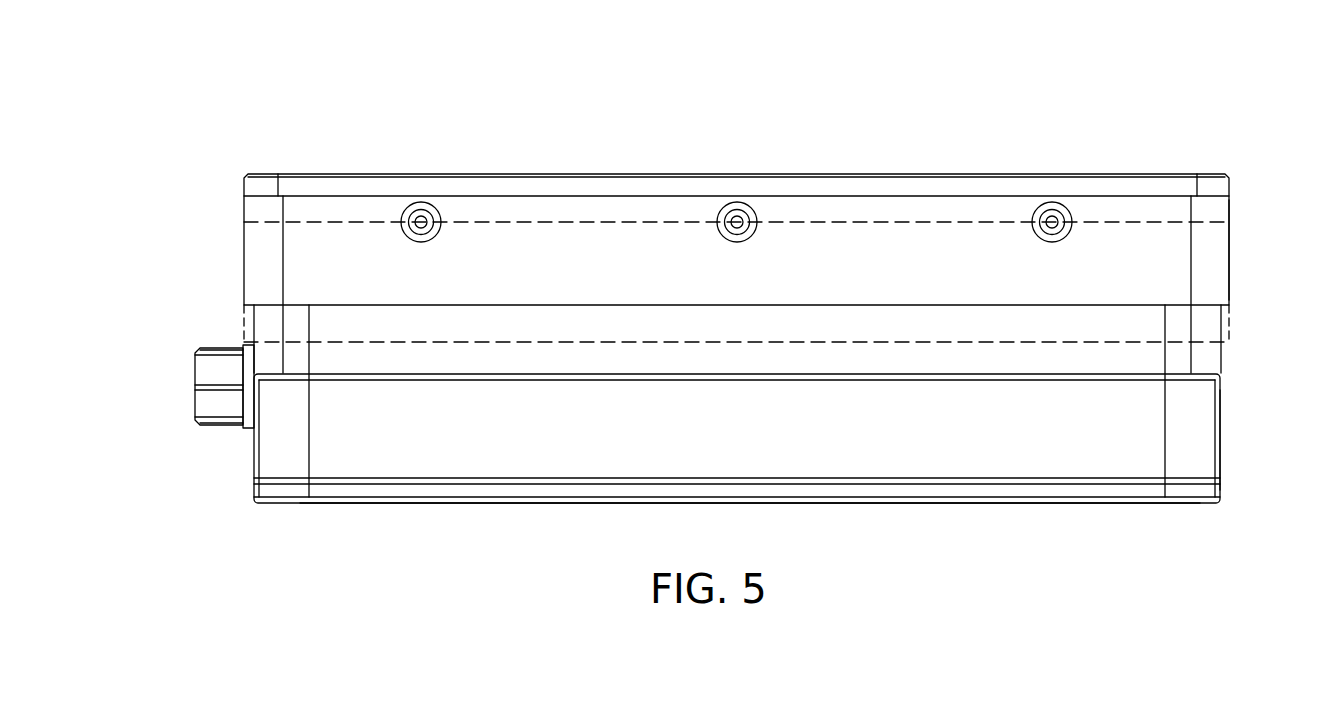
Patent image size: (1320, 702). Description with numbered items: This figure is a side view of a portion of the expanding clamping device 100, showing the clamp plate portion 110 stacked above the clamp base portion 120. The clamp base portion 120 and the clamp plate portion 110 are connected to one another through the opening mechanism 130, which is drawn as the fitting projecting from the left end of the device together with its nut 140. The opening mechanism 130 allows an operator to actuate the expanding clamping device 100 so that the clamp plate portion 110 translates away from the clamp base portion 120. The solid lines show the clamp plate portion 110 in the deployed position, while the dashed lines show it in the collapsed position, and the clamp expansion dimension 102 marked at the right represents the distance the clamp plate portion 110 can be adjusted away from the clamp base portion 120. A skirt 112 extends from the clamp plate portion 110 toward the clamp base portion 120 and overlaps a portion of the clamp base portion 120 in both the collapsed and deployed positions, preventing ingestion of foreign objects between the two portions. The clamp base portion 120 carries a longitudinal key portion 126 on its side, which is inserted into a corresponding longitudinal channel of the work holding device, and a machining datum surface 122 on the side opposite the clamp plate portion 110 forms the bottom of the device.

The expanding clamping device 100 is at (1142, 90).
The clamp plate portion 110 is at (270, 165).
The skirt 112 is at (1232, 248).
The clamp expansion dimension 102 is at (1291, 273).
The clamp base portion 120 is at (252, 470).
The machining datum surface 122 is at (968, 503).
The longitudinal key portion 126 is at (1222, 457).
The opening mechanism 130 is at (183, 362).
The nut 140 is at (195, 403).